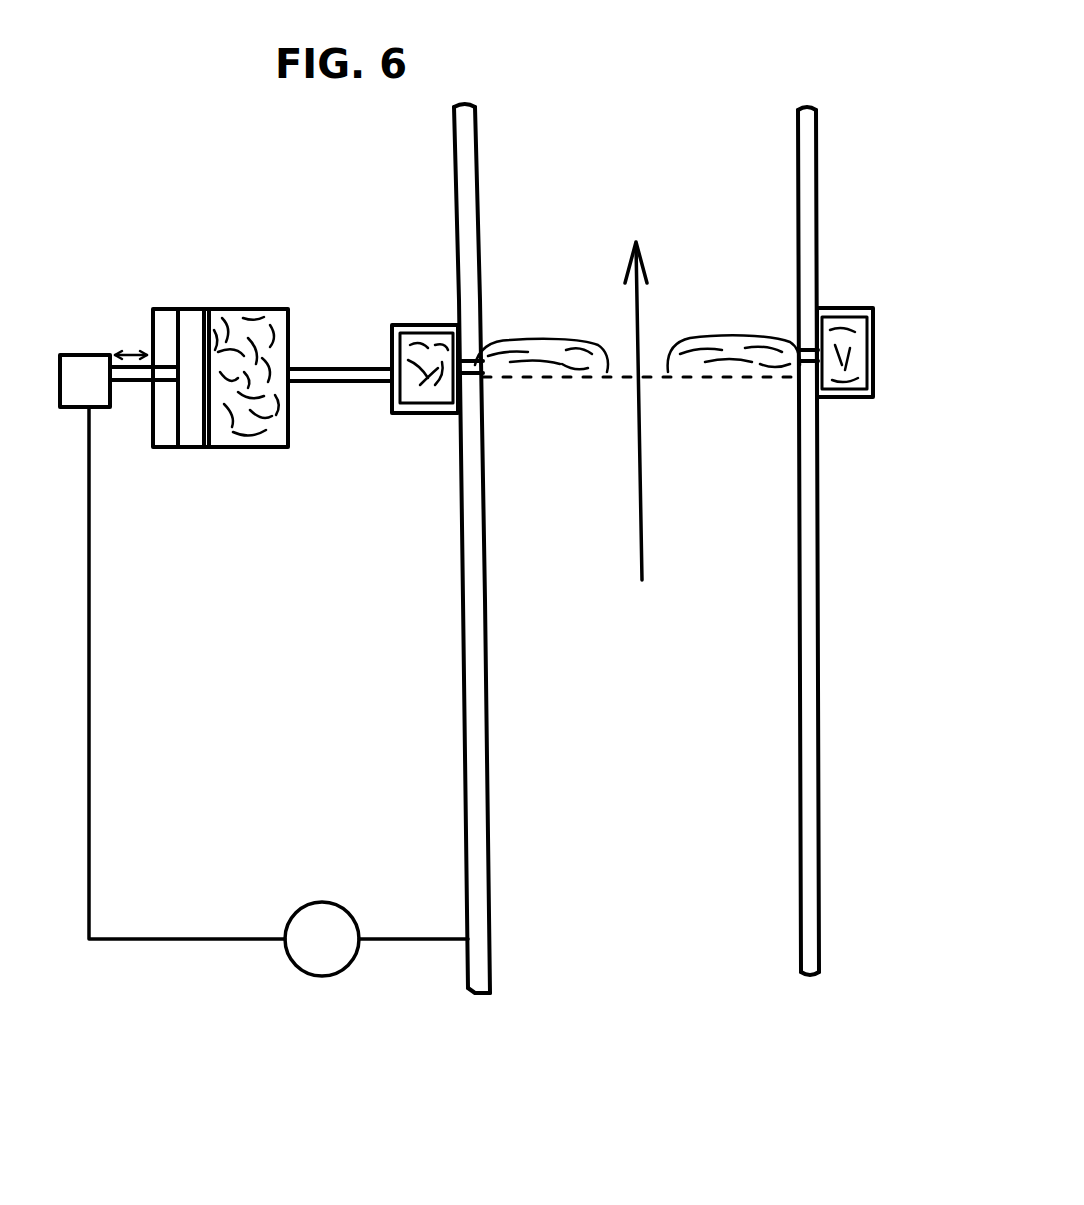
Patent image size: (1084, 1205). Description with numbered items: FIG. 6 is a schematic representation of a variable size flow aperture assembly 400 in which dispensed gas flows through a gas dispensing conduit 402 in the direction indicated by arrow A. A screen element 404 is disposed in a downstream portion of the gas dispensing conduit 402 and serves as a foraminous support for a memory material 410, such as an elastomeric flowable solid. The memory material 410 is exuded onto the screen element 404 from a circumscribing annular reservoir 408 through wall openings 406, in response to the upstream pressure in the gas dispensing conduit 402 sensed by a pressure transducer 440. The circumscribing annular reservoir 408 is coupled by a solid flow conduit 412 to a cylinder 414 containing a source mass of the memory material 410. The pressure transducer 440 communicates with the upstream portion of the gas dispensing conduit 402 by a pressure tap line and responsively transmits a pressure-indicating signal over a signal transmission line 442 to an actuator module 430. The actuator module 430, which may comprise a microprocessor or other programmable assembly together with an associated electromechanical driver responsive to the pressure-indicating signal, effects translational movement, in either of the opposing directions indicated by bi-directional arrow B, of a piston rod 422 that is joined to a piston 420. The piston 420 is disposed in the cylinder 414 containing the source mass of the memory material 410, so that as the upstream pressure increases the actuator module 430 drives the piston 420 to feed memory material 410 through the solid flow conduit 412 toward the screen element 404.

The variable size flow aperture assembly 400 is at (385, 613).
The gas dispensing conduit 402 is at (820, 636).
The screen element 404 is at (765, 375).
The wall openings 406 is at (470, 358).
The circumscribing annular reservoir 408 is at (408, 325).
The memory material 410 is at (423, 413).
The solid flow conduit 412 is at (312, 387).
The cylinder 414 is at (250, 447).
The piston 420 is at (193, 358).
The piston rod 422 is at (130, 383).
The actuator module 430 is at (74, 372).
The pressure transducer 440 is at (332, 976).
The signal transmission line 442 is at (92, 832).
The arrow A is at (643, 483).
The bi-directional arrow B is at (133, 352).